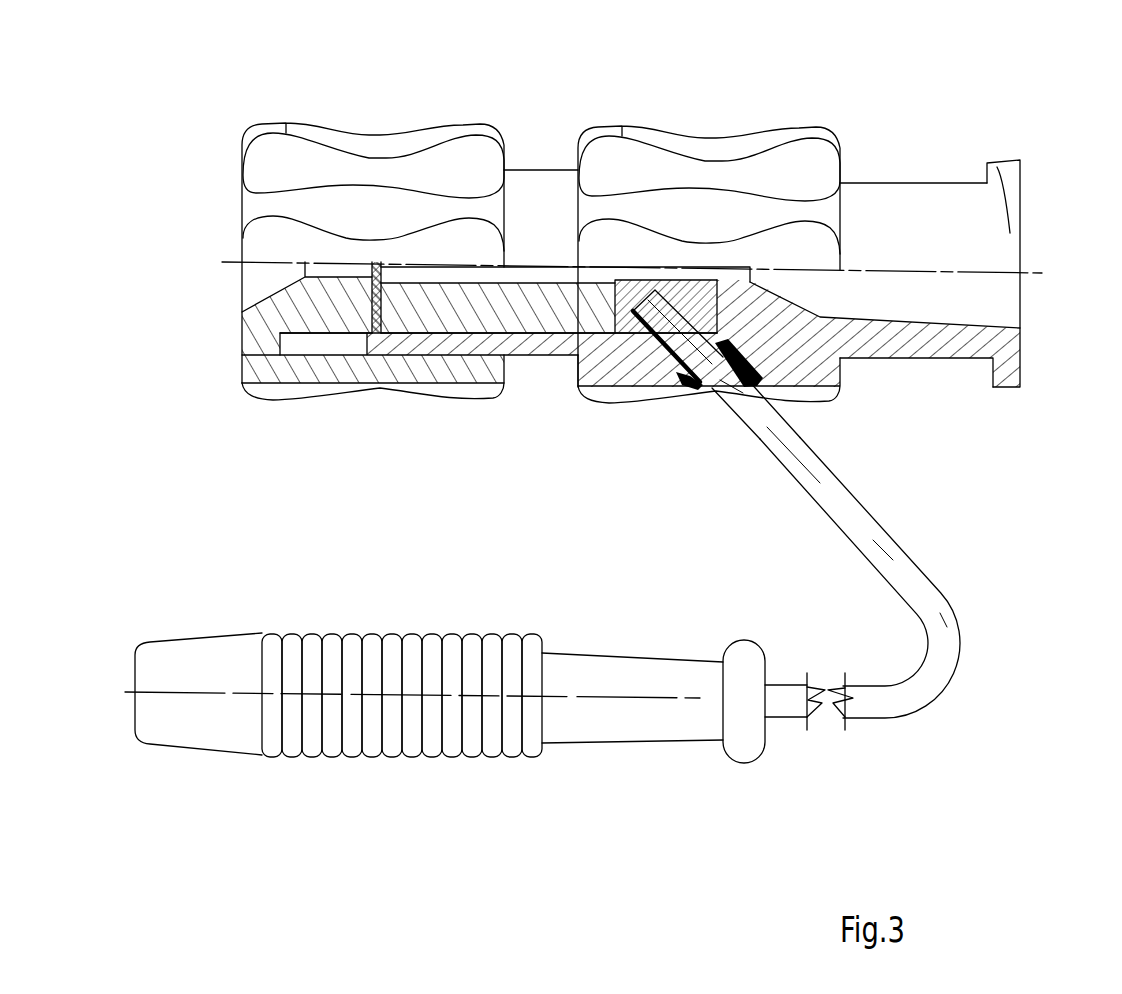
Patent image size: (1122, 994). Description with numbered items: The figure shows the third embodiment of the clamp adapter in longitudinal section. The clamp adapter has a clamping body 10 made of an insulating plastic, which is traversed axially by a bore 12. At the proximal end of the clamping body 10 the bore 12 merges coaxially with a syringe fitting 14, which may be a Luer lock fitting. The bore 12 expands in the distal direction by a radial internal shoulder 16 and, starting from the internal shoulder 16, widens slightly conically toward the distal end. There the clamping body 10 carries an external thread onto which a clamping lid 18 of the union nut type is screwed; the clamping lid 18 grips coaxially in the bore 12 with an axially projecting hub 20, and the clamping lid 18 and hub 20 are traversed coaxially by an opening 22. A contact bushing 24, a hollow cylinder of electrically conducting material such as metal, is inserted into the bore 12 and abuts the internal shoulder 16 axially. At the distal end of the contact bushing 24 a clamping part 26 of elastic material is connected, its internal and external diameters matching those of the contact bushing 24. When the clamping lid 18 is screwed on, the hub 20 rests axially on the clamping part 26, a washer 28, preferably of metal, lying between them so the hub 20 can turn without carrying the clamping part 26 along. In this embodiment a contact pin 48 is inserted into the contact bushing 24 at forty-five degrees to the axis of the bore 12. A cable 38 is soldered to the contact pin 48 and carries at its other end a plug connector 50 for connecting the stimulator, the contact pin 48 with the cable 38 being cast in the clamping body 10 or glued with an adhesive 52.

The clamping body 10 is at (533, 347).
The bore 12 is at (513, 273).
The syringe fitting 14 is at (983, 348).
The internal shoulder 16 is at (718, 305).
The clamping lid 18 is at (268, 357).
The hub 20 is at (347, 295).
The opening 22 is at (265, 272).
The contact bushing 24 is at (695, 298).
The clamping part 26 is at (465, 293).
The washer 28 is at (377, 300).
The cable 38 is at (752, 410).
The contact pin 48 is at (660, 322).
The plug connector 50 is at (393, 732).
The adhesive 52 is at (762, 395).